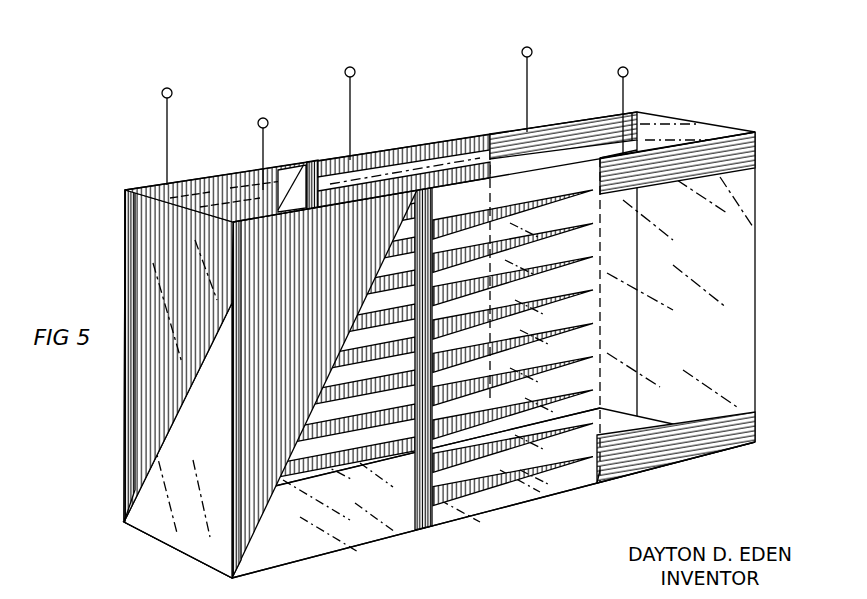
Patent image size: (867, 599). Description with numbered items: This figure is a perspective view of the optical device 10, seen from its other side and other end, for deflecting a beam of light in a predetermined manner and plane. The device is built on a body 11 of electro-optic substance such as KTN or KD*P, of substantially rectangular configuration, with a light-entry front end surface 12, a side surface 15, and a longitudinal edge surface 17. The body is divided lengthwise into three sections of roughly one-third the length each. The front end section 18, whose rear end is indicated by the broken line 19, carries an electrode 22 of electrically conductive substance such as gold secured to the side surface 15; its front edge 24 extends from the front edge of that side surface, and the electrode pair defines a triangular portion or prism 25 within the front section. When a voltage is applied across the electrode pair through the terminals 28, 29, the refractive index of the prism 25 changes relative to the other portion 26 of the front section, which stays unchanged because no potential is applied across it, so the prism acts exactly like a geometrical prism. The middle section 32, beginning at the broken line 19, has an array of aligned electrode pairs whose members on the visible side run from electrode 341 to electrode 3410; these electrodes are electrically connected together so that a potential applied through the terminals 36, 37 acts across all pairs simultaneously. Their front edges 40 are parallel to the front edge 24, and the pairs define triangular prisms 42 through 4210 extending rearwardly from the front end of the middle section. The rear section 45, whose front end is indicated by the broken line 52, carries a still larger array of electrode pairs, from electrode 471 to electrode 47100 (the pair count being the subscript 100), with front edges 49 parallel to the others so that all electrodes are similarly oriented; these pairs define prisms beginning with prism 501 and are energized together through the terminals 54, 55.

The optical device 10 is at (720, 86).
The body 11 is at (122, 219).
The front end surface 12 is at (182, 527).
The side surface 15 is at (740, 257).
The longitudinal edge surface 17 is at (163, 190).
The front end section 18 is at (300, 550).
The broken line 19 is at (343, 170).
The electrode 22 is at (250, 497).
The front edge 24 is at (230, 468).
The triangular portion or prism 25 is at (268, 372).
The other portion 26 is at (345, 537).
The terminal 28 is at (171, 89).
The terminal 29 is at (263, 118).
The middle section 32 is at (537, 487).
The electrode 341 is at (430, 193).
The electrode 3410 is at (447, 505).
The terminal 36 is at (350, 67).
The terminal 37 is at (443, 190).
The front edge 40 is at (415, 513).
The triangular portion or prism 42 is at (483, 188).
The triangular portion or prism 4210 is at (500, 487).
The rear section 45 is at (720, 124).
The electrode 471 is at (607, 157).
The electrode 47100 is at (610, 480).
The front edge 49 is at (597, 467).
The triangular portion or prism 501 is at (697, 472).
The broken line 52 is at (513, 138).
The terminal 54 is at (531, 49).
The terminal 55 is at (627, 68).
The layers 100 is at (671, 252).